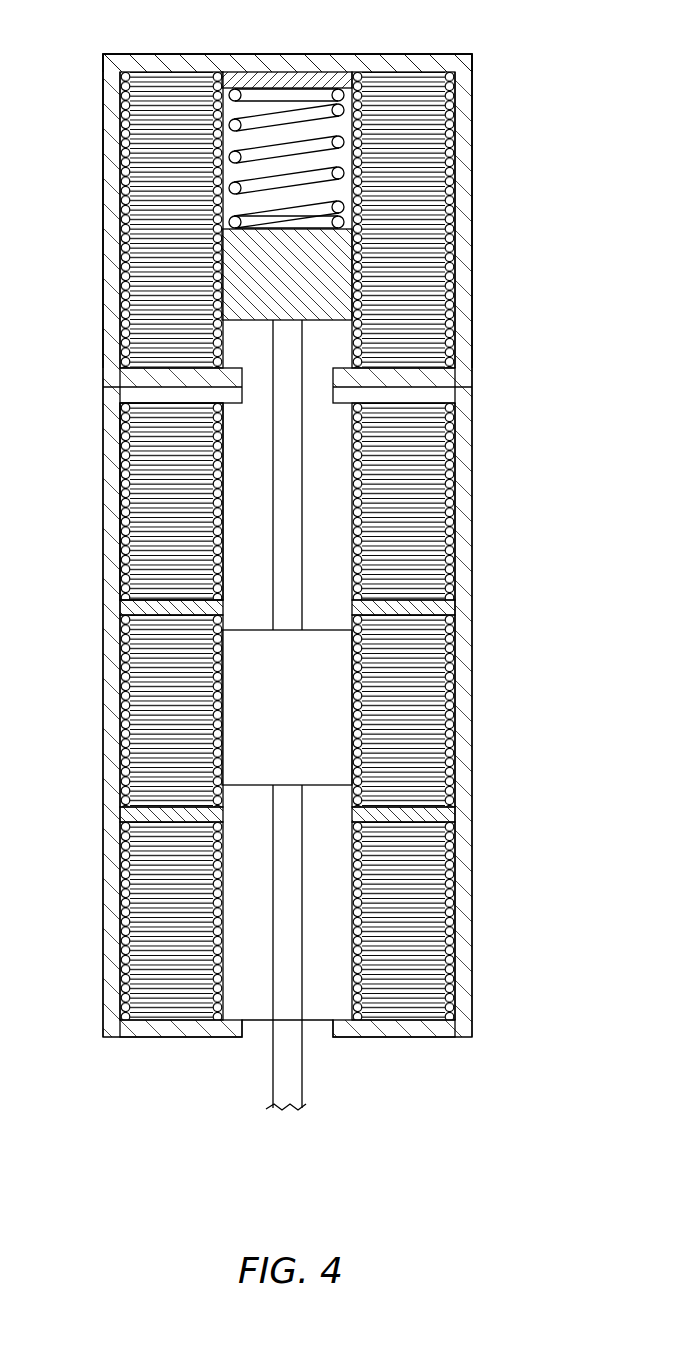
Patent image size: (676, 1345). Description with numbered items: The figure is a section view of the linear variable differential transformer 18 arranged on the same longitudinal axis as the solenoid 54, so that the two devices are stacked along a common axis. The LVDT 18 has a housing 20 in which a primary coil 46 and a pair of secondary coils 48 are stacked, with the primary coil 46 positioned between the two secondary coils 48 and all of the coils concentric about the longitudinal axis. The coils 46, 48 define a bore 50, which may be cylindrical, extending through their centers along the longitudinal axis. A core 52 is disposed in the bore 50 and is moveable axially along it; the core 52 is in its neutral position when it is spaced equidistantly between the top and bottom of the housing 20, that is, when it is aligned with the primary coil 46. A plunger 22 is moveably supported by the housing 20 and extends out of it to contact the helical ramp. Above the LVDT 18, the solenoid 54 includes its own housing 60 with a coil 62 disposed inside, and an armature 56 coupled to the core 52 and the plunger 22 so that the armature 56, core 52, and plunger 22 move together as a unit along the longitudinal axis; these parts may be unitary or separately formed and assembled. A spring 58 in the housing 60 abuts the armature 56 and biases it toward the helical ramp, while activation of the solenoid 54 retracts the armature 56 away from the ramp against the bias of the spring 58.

The linear variable differential transformer 18 is at (475, 958).
The housing 20 is at (103, 755).
The plunger 22 is at (288, 1058).
The primary coil 46 is at (172, 722).
The secondary coils 48 is at (172, 492).
The bore 50 is at (248, 592).
The core 52 is at (307, 748).
The solenoid 54 is at (475, 232).
The armature 56 is at (288, 523).
The spring 58 is at (213, 168).
The housing 60 is at (135, 65).
The coil 62 is at (170, 305).